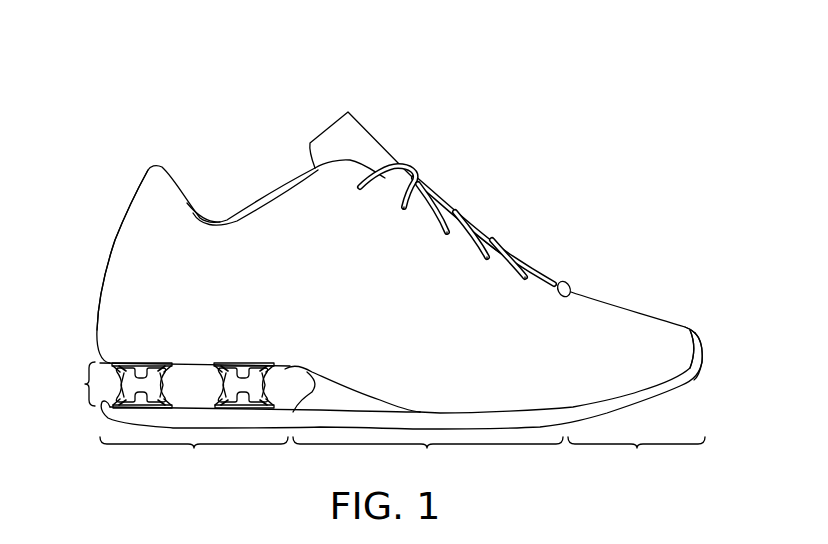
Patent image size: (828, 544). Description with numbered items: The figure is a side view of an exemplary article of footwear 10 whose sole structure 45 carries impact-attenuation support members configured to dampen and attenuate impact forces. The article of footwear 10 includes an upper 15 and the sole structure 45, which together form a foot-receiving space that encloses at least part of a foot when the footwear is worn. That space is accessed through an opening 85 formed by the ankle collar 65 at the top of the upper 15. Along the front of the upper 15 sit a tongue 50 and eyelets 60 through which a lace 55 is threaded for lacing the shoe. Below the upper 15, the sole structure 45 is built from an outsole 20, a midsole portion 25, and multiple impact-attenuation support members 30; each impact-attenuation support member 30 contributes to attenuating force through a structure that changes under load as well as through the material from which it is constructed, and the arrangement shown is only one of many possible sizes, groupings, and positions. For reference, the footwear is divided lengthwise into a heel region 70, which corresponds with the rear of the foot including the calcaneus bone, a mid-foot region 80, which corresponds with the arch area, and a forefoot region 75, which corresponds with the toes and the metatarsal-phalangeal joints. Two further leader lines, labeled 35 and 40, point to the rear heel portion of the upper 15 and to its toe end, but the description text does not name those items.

The article of footwear 10 is at (476, 128).
The upper 15 is at (592, 307).
The outsole 20 is at (597, 410).
The midsole portion 25 is at (328, 392).
The impact-attenuation support member 30 is at (178, 378).
The heel region of upper 35 is at (125, 267).
The toe region 40 is at (682, 328).
The sole structure 45 is at (75, 384).
The tongue 50 is at (362, 137).
The lace 55 is at (521, 257).
The eyelets 60 is at (488, 259).
The ankle collar 65 is at (255, 211).
The heel region 70 is at (194, 455).
The forefoot region 75 is at (636, 455).
The mid-foot region 80 is at (428, 455).
The opening 85 is at (218, 209).